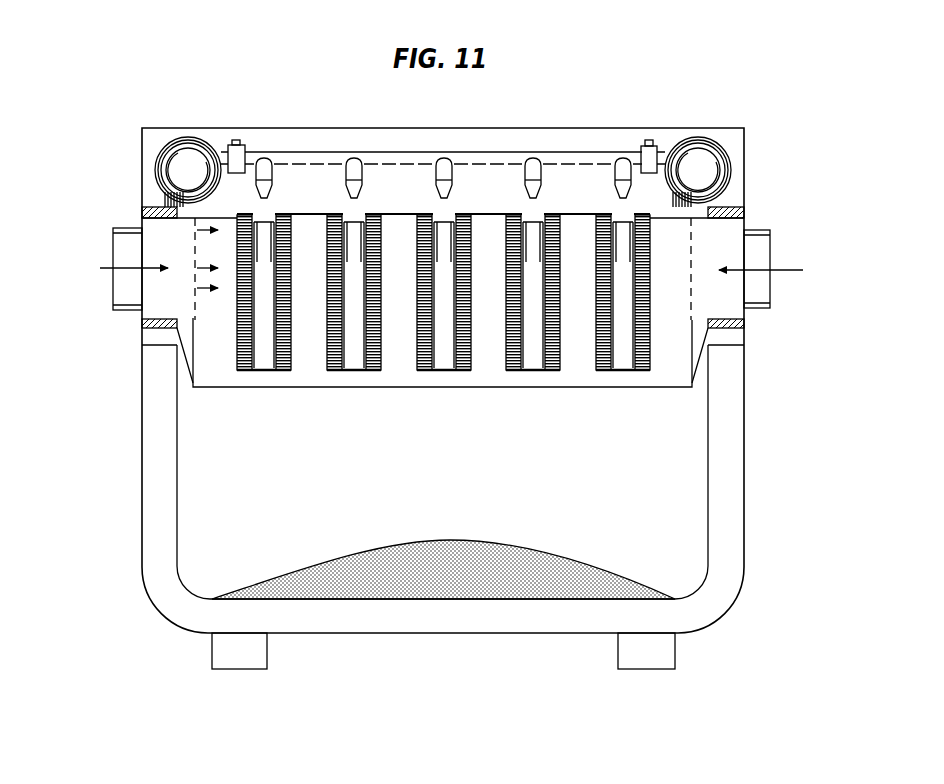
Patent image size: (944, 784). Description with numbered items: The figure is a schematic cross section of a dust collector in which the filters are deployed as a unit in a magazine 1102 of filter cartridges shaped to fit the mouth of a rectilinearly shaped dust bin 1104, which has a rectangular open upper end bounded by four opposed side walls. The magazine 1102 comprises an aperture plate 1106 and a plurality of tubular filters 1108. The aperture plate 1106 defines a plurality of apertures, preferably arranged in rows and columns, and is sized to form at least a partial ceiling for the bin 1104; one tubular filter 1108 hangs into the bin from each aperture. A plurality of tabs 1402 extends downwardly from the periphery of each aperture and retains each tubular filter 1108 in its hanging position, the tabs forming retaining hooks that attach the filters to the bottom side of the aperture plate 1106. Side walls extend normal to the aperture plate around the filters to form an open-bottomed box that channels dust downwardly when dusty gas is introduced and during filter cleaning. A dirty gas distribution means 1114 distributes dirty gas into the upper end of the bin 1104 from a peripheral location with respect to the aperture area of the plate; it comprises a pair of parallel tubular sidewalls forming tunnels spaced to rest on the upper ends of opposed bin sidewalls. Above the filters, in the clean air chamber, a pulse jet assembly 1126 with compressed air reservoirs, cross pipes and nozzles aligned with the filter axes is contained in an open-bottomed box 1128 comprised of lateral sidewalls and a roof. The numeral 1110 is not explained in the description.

The magazine of filter cartridges 1102 is at (442, 307).
The dust bin 1104 is at (743, 481).
The aperture plate 1106 is at (398, 212).
The filters 1108 is at (450, 371).
The filter housing 1110 is at (313, 378).
The dirty gas distribution means 1114 is at (121, 213).
The pulse jet assembly 1126 is at (499, 146).
The open-bottomed box 1128 is at (637, 129).
The tabs 1402 is at (434, 217).